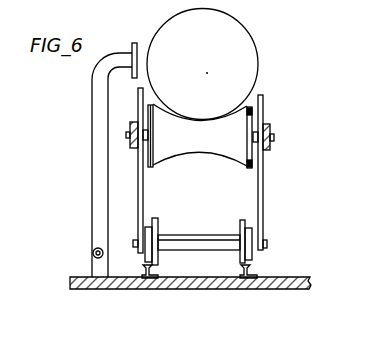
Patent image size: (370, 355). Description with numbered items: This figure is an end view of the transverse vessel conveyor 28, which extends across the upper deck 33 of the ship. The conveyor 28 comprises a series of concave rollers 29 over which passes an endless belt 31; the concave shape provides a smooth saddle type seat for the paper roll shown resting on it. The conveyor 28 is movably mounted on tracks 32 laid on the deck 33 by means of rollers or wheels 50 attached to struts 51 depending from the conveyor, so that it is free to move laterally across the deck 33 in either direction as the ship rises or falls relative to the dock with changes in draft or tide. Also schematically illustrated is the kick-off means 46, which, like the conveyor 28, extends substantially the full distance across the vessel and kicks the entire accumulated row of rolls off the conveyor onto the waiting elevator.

The kick-off means 46 is at (93, 140).
The struts 51 is at (143, 191).
The conveyor 28 is at (277, 124).
The concave rollers 29 is at (256, 153).
The endless belt 31 is at (197, 149).
The rollers or wheels 50 is at (156, 224).
The tracks 32 is at (140, 273).
The upper deck 33 is at (275, 285).